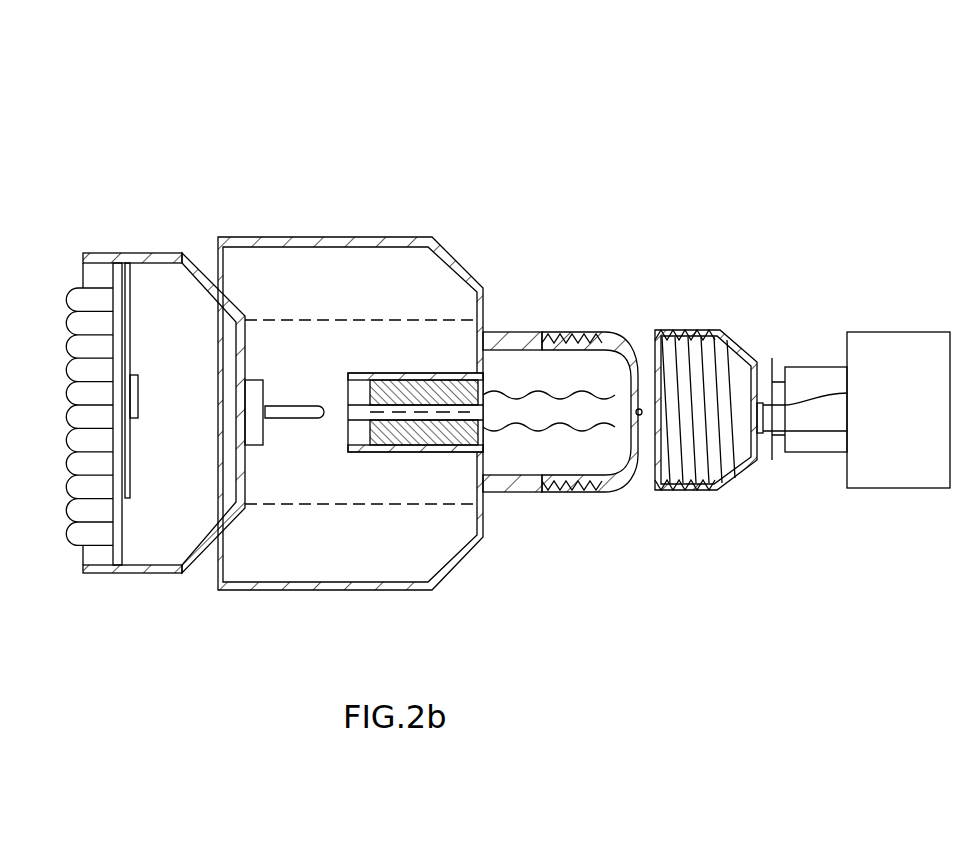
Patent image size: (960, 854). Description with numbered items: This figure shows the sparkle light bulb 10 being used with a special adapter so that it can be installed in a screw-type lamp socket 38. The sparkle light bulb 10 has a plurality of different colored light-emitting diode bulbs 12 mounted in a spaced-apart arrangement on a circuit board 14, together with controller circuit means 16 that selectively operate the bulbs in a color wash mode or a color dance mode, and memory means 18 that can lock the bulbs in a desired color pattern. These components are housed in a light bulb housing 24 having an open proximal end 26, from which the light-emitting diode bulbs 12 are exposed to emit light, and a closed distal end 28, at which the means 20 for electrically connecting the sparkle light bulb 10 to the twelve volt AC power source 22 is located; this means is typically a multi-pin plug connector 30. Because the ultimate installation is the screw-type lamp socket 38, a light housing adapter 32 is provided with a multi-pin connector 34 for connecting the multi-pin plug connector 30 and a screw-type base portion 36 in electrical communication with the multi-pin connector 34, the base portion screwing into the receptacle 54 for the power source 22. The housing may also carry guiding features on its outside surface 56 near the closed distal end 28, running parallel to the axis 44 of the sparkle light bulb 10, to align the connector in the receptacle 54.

The sparkle light bulb 10 is at (10, 334).
The light-emitting diode bulbs 12 is at (80, 307).
The circuit board 14 is at (115, 528).
The controller circuit means 16 is at (138, 312).
The memory means 18 is at (138, 383).
The means for electrically connecting 20 is at (291, 373).
The 12 VAC power source 22 is at (887, 350).
The light bulb housing 24 is at (85, 576).
The open proximal end 26 is at (122, 335).
The closed distal end 28 is at (248, 322).
The multi-pin plug connector 30 is at (275, 412).
The light housing adapter 32 is at (437, 239).
The multi-pin connector 34 is at (345, 431).
The screw-type base portion 36 is at (585, 340).
The screw-type lamp socket 38 is at (670, 340).
The axis 44 is at (337, 413).
The receptacle 54 is at (722, 520).
The outside surface 56 is at (186, 574).